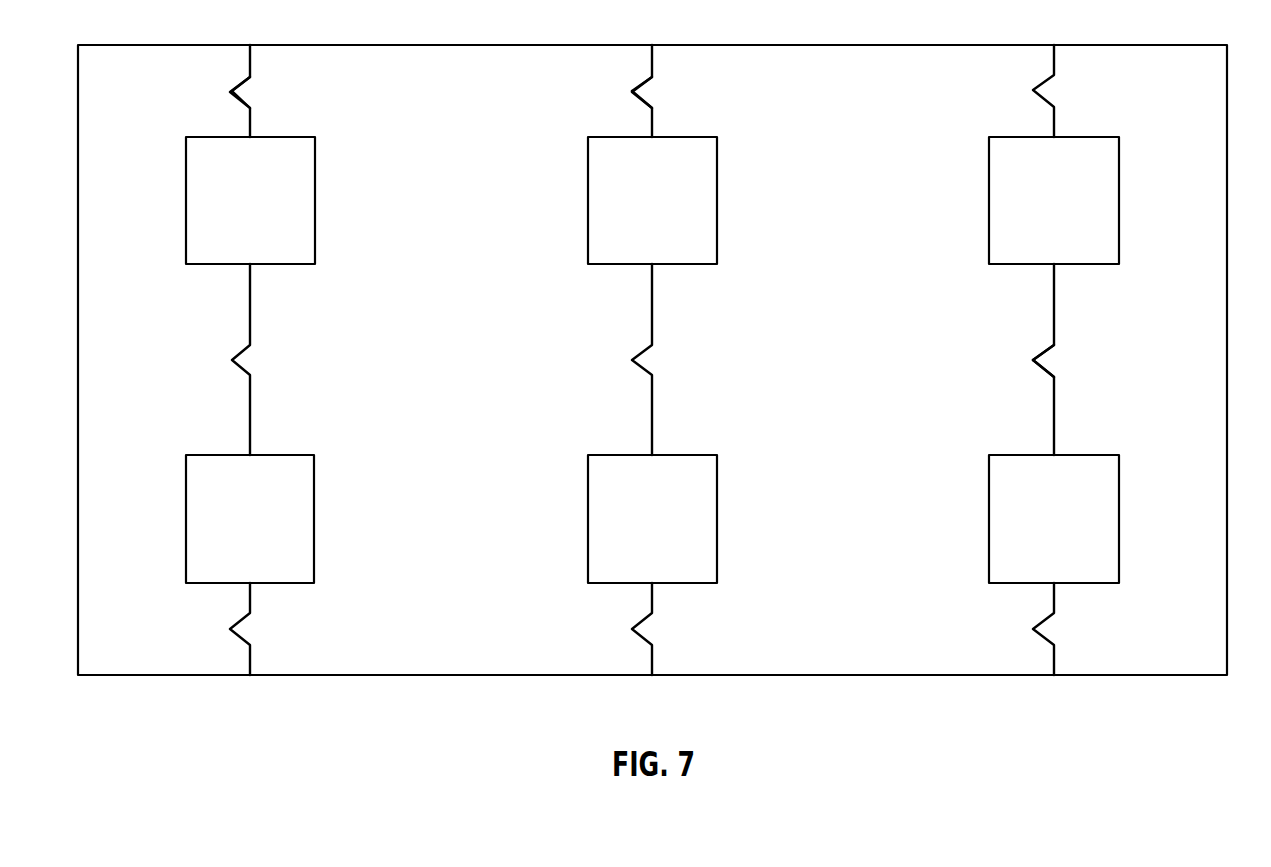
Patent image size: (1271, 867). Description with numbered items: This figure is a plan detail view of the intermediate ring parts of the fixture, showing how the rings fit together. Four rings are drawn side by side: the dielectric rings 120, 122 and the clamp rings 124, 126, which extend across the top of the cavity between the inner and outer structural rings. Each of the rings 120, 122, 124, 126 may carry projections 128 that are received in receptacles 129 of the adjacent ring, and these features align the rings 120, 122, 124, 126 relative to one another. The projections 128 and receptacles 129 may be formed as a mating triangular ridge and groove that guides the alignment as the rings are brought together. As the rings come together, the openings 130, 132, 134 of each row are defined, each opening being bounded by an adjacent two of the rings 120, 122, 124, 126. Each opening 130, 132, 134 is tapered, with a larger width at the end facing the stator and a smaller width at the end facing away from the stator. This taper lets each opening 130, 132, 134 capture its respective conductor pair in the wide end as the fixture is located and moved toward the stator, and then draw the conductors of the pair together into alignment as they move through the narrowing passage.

The dielectric ring 120 is at (493, 373).
The dielectric ring 122 is at (845, 373).
The clamp ring 124 is at (143, 373).
The clamp ring 126 is at (1197, 375).
The projection 128 is at (232, 91).
The receptacle 129 is at (243, 83).
The opening 130 is at (199, 457).
The opening 132 is at (601, 457).
The opening 134 is at (1003, 457).